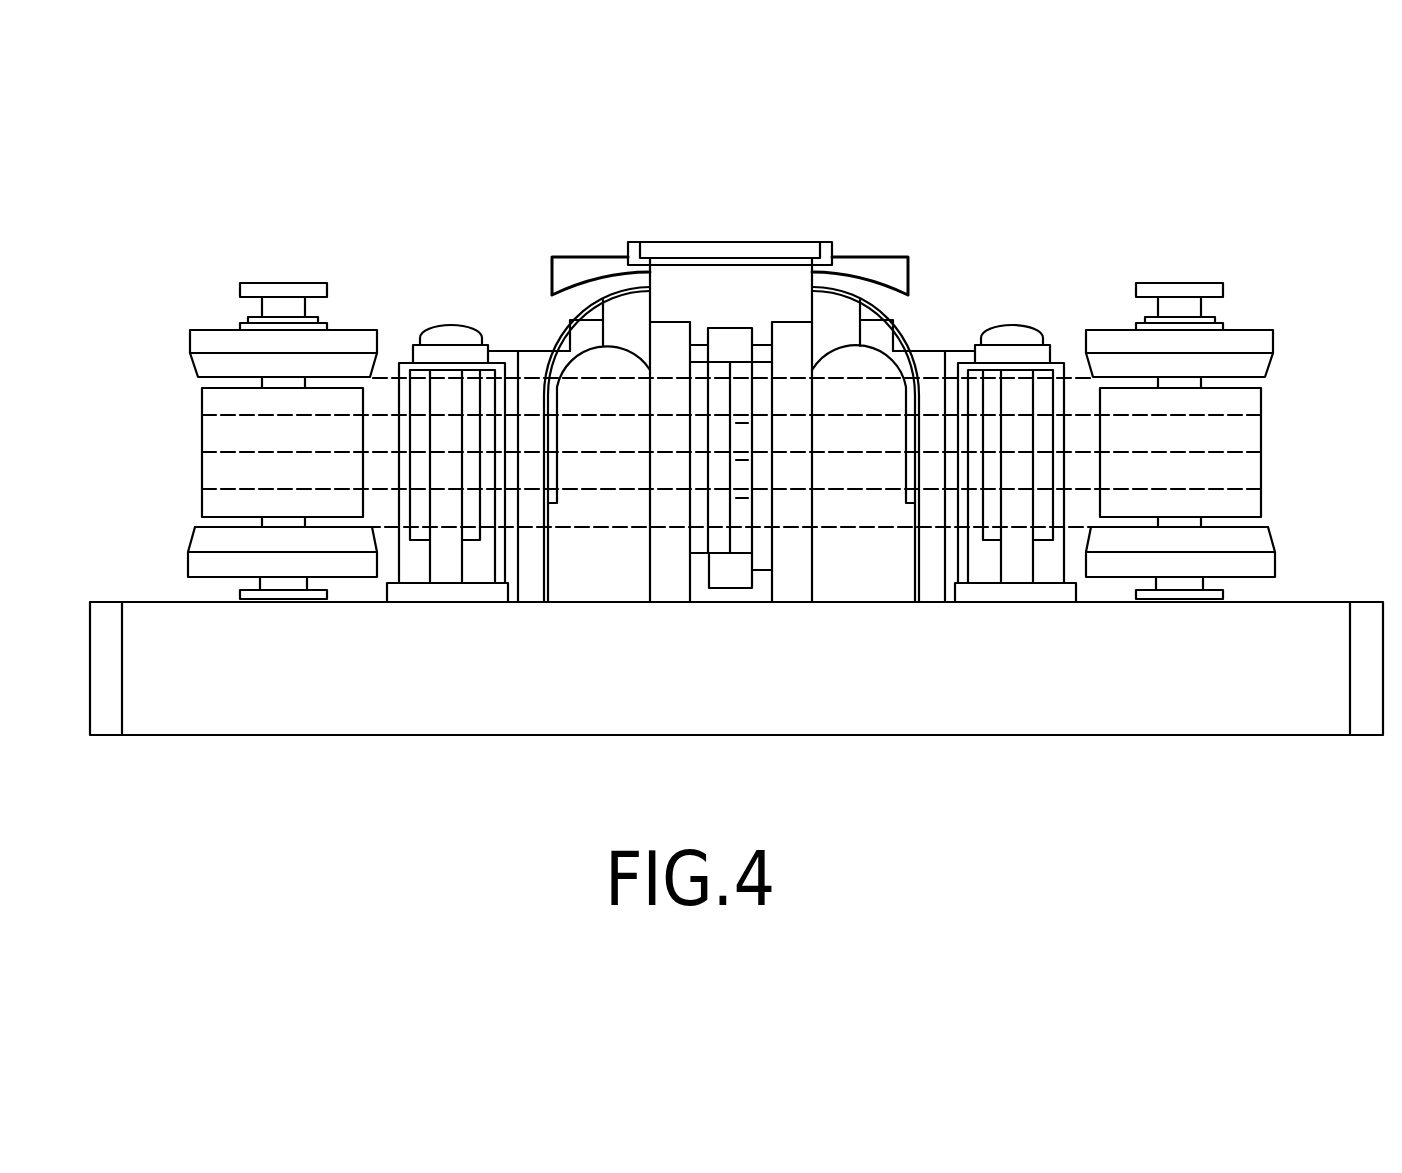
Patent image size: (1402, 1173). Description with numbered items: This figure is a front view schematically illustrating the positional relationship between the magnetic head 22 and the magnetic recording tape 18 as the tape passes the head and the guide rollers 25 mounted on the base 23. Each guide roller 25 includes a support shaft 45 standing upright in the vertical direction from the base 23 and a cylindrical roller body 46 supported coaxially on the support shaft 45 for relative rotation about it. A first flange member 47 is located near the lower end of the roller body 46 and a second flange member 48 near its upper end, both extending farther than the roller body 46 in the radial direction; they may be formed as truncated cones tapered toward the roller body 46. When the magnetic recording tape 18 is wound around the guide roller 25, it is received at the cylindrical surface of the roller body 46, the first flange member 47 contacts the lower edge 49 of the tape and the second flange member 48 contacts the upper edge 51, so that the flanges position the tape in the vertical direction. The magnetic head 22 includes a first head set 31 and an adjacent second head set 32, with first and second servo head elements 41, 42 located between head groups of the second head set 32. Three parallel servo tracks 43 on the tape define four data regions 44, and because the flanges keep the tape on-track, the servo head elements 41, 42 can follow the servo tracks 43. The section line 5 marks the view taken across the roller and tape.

The section line for FIG. 5 is at (270, 181).
The magnetic recording tape 18 is at (940, 378).
The magnetic head 22 is at (708, 568).
The base 23 is at (90, 662).
The guide roller 25 is at (733, 403).
The first head set 31 is at (720, 362).
The second head set 32 is at (740, 557).
The first servo head element 41 is at (742, 418).
The second servo head element 42 is at (743, 427).
The servo track 43 is at (583, 417).
The data region 44 is at (1270, 410).
The support shaft 45 is at (240, 289).
The cylindrical roller body 46 is at (365, 393).
The first flange member 47 is at (197, 532).
The second flange member 48 is at (190, 370).
The lower edge 49 is at (390, 527).
The upper edge 51 is at (443, 380).